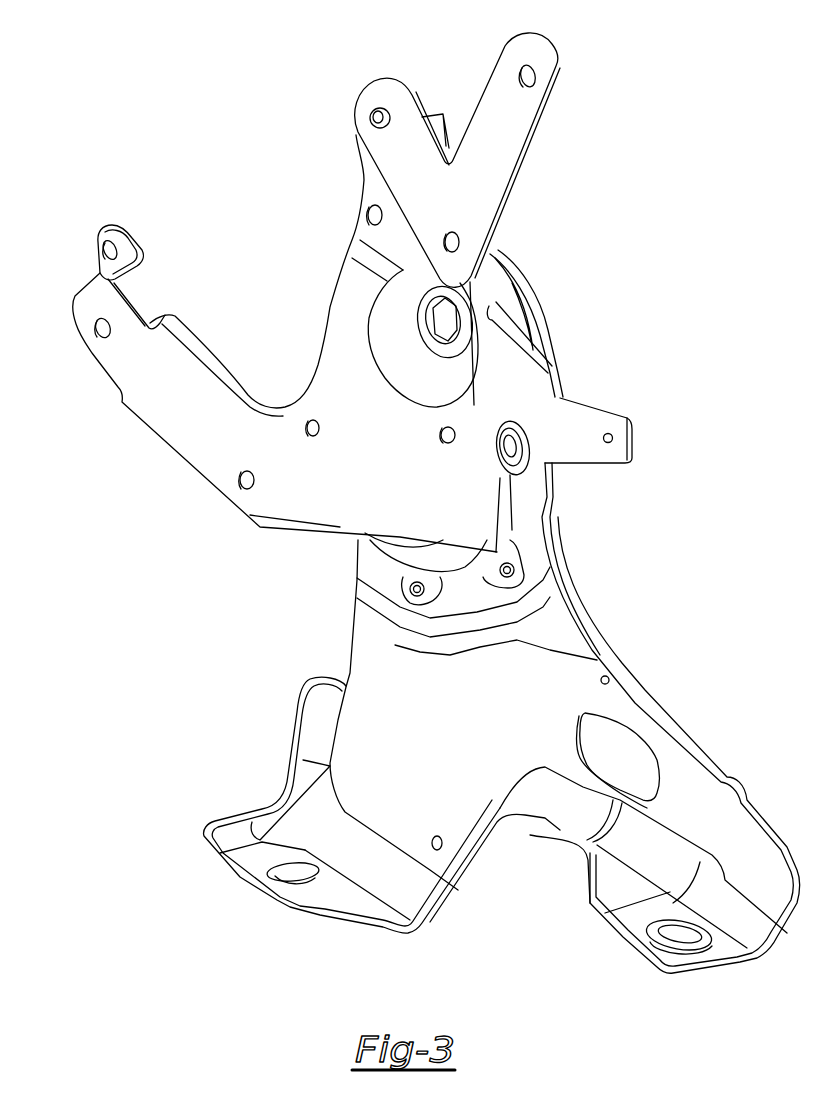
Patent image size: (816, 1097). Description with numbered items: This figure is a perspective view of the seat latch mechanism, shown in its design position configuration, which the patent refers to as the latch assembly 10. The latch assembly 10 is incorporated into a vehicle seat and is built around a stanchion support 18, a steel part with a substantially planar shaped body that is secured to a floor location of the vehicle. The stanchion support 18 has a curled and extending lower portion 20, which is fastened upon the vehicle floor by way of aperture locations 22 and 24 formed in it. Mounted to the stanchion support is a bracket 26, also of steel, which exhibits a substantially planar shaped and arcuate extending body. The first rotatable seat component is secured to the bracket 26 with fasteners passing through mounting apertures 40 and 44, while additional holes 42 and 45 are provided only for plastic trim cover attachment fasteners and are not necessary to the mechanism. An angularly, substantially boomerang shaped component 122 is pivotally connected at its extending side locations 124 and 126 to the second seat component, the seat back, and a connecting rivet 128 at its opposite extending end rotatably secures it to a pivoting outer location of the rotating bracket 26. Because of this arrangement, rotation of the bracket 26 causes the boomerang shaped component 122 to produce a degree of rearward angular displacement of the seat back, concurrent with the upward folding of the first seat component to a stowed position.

The latch assembly 10 is at (408, 511).
The stanchion support 18 is at (488, 627).
The lower portion 20 is at (467, 883).
The aperture location 22 is at (285, 873).
The aperture location 24 is at (690, 935).
The bracket 26 is at (257, 343).
The mounting aperture 40 is at (240, 478).
The hole 42 is at (305, 430).
The mounting aperture 44 is at (95, 327).
The hole 45 is at (368, 212).
The boomerang shaped component 122 is at (458, 152).
The extending side location 124 is at (458, 238).
The extending side location 126 is at (533, 73).
The connecting rivet 128 is at (370, 118).